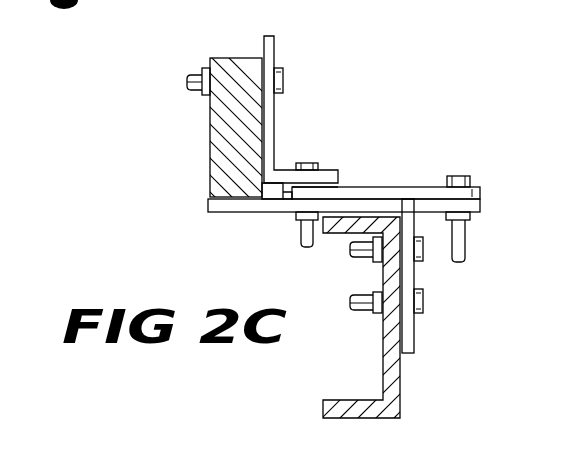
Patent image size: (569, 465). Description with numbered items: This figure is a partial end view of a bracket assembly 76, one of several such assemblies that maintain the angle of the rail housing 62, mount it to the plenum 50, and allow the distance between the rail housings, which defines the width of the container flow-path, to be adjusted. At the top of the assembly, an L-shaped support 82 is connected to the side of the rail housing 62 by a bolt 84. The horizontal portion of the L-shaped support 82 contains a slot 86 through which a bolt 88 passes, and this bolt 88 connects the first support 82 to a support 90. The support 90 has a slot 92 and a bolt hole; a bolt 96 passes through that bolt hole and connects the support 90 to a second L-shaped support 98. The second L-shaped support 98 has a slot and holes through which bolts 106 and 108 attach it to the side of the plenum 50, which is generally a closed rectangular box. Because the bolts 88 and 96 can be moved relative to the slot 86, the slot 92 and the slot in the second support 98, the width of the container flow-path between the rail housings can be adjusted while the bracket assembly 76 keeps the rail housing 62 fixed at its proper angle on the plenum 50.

The plenum 50 is at (382, 319).
The rail housing 62 is at (233, 62).
The bracket assembly 76 is at (412, 96).
The L-shaped support 82 is at (276, 125).
The bolt 84 is at (284, 80).
The slot 86 is at (339, 183).
The bolt 88 is at (308, 163).
The support 90 is at (458, 175).
The slot 92 is at (483, 190).
The bolt 96 is at (405, 186).
The second L-shaped support 98 is at (417, 338).
The bolt 106 is at (424, 250).
The bolt 108 is at (424, 300).